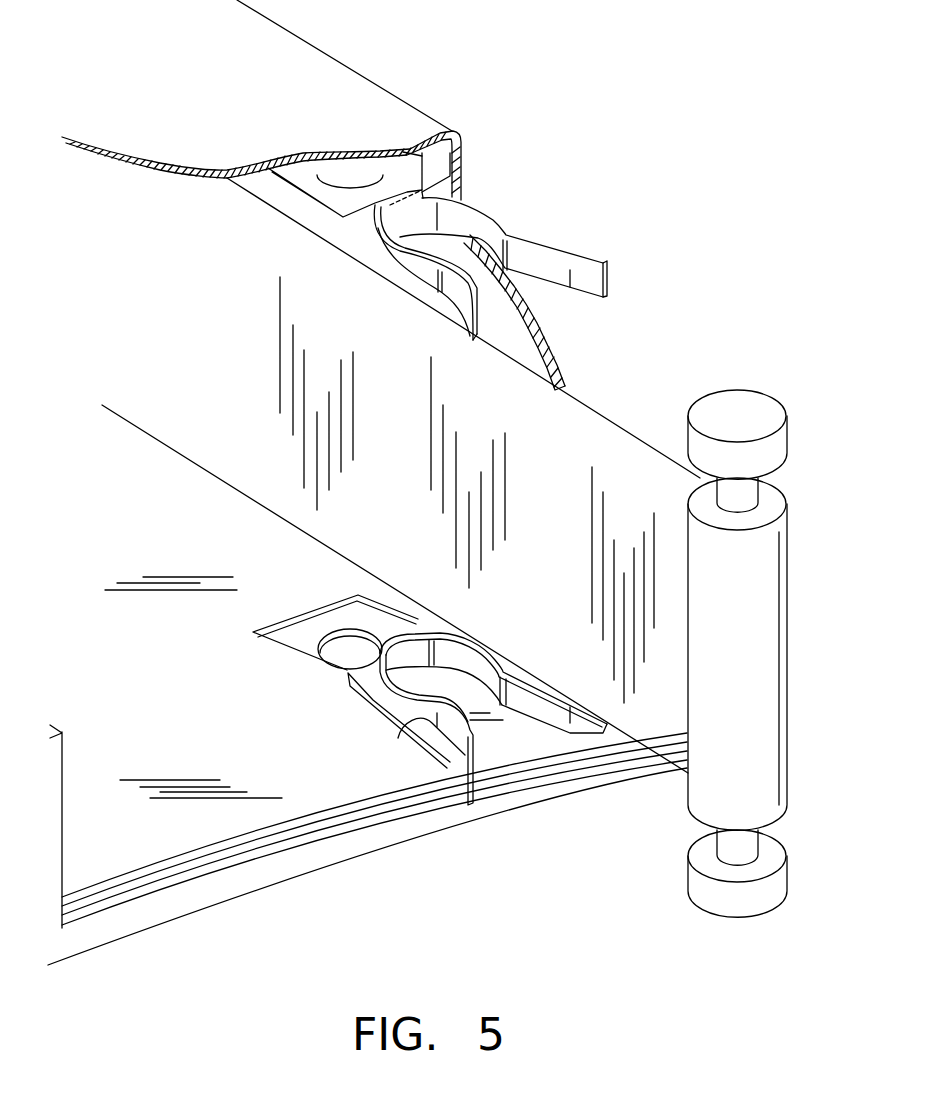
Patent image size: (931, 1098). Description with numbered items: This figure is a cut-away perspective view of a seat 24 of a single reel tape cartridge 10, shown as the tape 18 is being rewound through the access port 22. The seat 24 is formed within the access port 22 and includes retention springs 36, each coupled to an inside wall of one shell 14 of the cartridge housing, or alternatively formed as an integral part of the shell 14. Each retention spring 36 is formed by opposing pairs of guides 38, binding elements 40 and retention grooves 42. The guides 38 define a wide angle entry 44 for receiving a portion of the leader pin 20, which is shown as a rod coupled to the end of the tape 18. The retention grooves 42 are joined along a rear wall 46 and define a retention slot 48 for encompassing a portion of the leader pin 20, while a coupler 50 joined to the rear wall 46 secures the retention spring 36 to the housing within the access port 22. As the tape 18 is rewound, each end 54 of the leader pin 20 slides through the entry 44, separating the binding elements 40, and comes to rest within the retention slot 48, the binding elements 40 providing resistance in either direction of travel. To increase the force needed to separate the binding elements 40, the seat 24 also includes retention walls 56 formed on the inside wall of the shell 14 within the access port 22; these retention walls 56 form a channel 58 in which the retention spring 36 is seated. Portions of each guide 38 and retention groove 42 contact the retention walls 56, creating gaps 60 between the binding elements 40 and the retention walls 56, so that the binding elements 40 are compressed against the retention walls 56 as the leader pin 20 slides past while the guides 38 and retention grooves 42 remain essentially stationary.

The tape cartridge 10 is at (507, 88).
The shell 14 is at (403, 118).
The tape 18 is at (185, 440).
The leader pin 20 is at (700, 793).
The access port 22 is at (237, 815).
The seat 24 is at (711, 544).
The retention spring 36 is at (432, 457).
The guide 38 is at (560, 248).
The binding element 40 is at (510, 233).
The retention groove 42 is at (395, 270).
The wide angle entry 44 is at (518, 739).
The rear wall 46 is at (410, 207).
The retention slot 48 is at (461, 661).
The coupler 50 is at (296, 173).
The end of leader pin 54 is at (738, 395).
The retention wall 56 is at (375, 707).
The channel 58 is at (483, 701).
The gap 60 is at (400, 736).